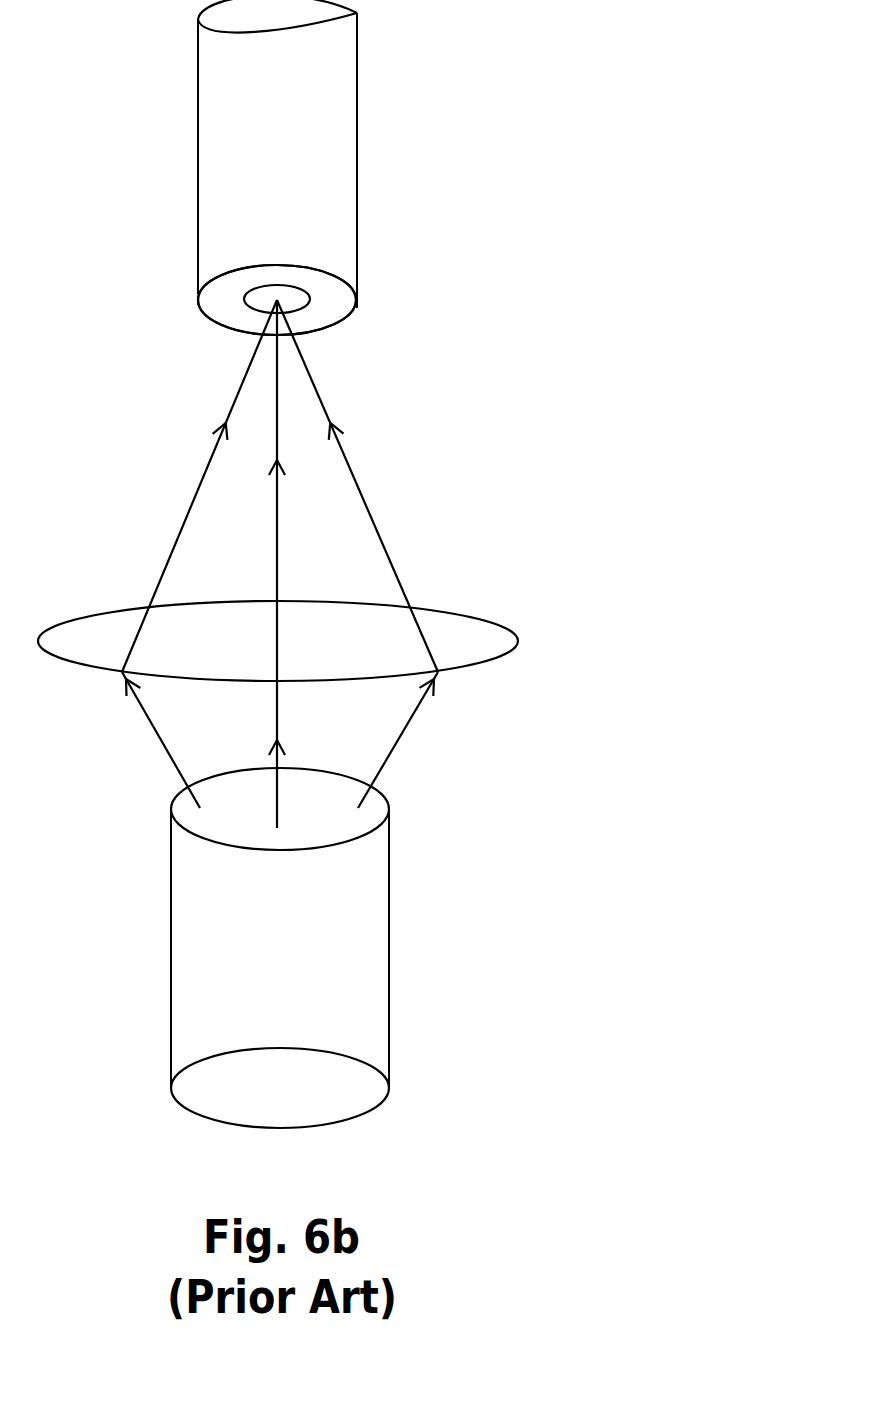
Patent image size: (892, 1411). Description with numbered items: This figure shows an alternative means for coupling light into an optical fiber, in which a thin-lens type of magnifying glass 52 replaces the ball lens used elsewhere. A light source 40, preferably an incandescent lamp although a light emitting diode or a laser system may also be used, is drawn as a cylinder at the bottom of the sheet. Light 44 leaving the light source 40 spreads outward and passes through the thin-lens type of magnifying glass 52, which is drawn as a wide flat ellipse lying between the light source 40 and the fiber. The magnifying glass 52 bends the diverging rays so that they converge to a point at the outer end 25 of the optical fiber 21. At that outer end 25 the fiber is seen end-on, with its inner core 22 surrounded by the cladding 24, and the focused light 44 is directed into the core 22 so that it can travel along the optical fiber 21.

The optical fiber 21 is at (313, 52).
The core 22 is at (267, 295).
The cladding 24 is at (325, 305).
The outer end 25 is at (275, 265).
The light 44 is at (357, 480).
The thin-lens type of magnifying glass 52 is at (497, 652).
The light source 40 is at (358, 948).